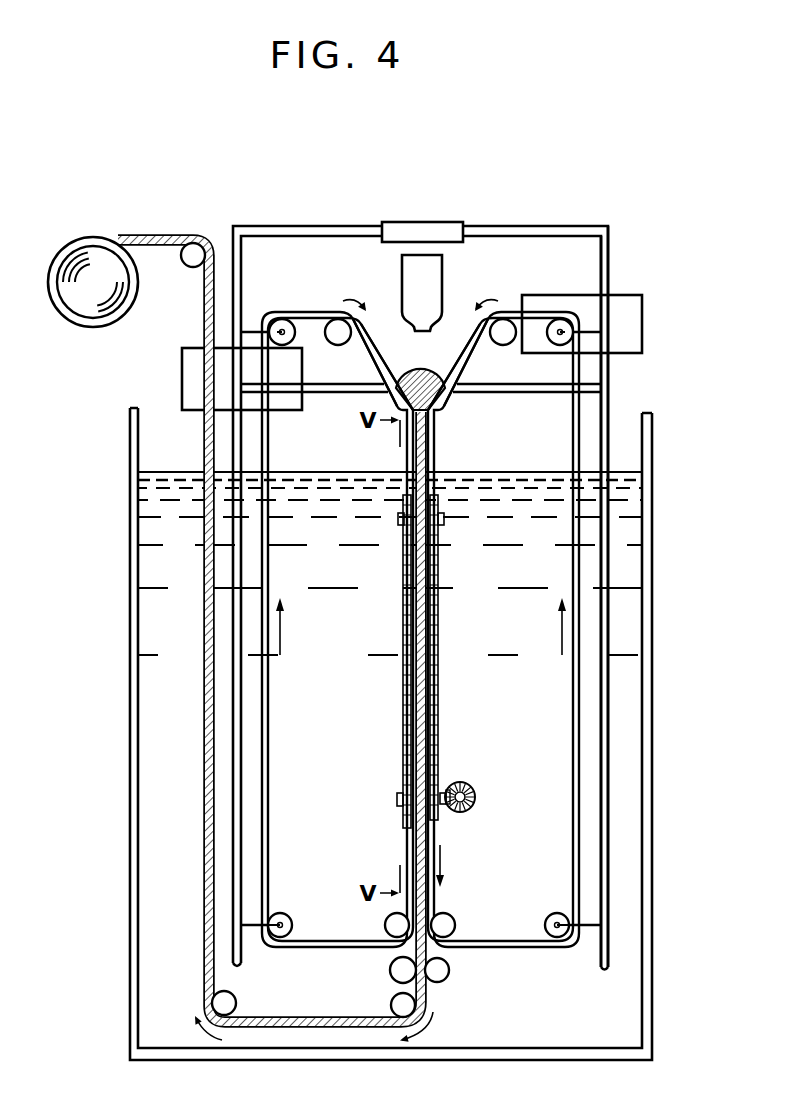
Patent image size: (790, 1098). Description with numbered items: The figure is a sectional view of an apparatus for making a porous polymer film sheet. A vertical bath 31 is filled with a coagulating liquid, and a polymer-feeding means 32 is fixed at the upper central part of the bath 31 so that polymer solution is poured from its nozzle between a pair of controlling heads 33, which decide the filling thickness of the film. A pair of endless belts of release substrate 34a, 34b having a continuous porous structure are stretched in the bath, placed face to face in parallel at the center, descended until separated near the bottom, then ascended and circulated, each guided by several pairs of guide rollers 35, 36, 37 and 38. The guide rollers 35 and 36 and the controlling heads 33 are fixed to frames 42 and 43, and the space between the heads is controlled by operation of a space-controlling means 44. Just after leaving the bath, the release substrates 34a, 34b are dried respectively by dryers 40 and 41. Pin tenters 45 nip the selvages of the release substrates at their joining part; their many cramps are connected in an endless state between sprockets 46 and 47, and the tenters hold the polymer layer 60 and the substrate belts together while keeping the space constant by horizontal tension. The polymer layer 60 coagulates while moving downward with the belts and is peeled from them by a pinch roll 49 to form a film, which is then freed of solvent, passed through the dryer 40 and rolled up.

The vertical bath 31 is at (653, 447).
The polymer-feeding means 32 is at (444, 271).
The controlling heads 33 is at (373, 360).
The release substrate endless belt 34a is at (270, 443).
The release substrate endless belt 34b is at (572, 449).
The guide rollers 35 is at (282, 329).
The guide rollers 36 is at (285, 916).
The guide rollers 37 is at (385, 926).
The guide rollers 38 is at (338, 346).
The dryer 40 is at (190, 411).
The dryer 41 is at (628, 354).
The frame 42 is at (307, 226).
The frame 43 is at (566, 226).
The space-controlling means 44 is at (443, 223).
The pin tenters 45 is at (447, 712).
The sprocket 46 is at (400, 781).
The sprocket 47 is at (398, 520).
The pinch roll 49 is at (449, 976).
The polymer layer 60 is at (430, 368).